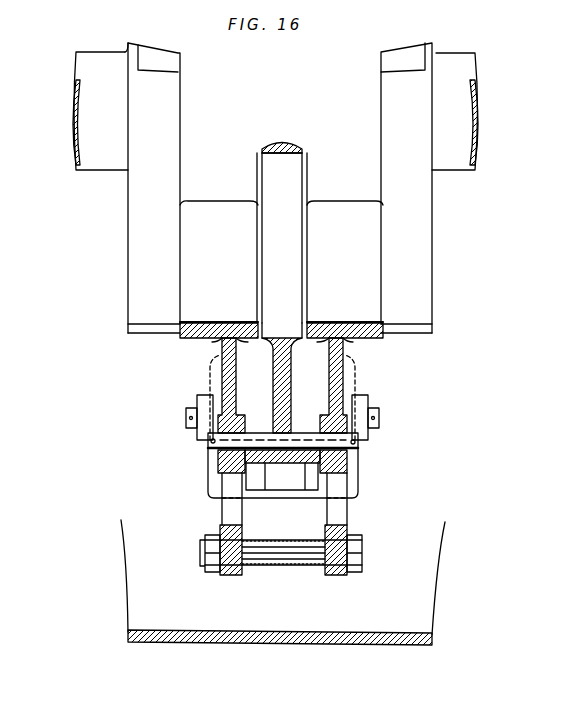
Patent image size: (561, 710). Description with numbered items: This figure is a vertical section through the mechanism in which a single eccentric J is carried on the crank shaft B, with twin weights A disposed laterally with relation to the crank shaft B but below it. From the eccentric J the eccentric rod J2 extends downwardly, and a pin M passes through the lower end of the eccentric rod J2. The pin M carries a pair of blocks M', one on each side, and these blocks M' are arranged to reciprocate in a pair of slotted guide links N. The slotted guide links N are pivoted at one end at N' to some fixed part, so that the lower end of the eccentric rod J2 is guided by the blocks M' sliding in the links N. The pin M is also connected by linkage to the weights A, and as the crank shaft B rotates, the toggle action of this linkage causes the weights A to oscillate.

The crank shaft B is at (275, 188).
The eccentric J is at (268, 165).
The eccentric rod J2 is at (283, 377).
The weights A is at (303, 368).
The pin M is at (315, 438).
The blocks M' is at (281, 473).
The slotted guide links N is at (285, 499).
The pivot N' is at (302, 550).